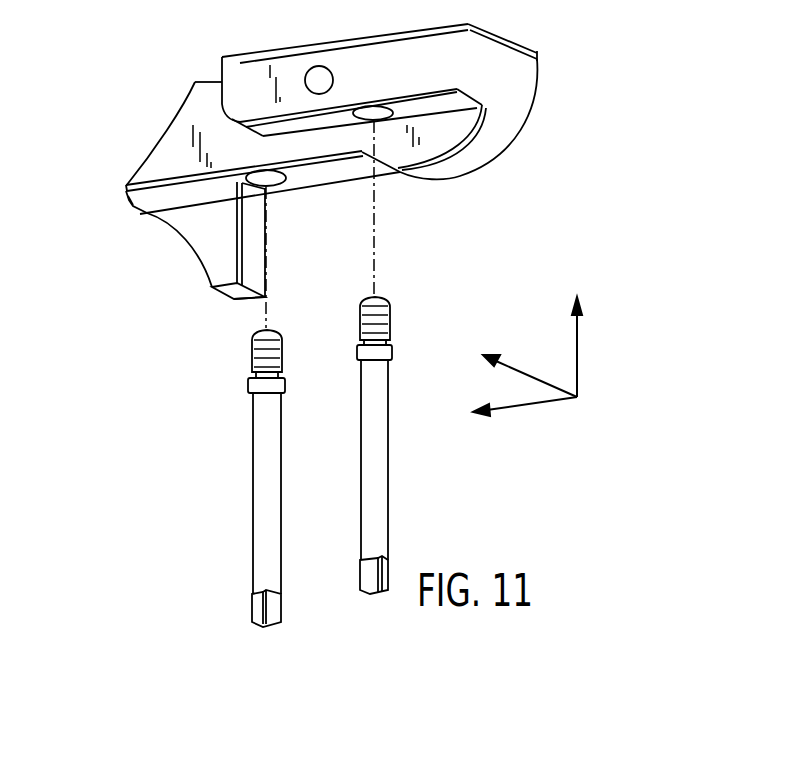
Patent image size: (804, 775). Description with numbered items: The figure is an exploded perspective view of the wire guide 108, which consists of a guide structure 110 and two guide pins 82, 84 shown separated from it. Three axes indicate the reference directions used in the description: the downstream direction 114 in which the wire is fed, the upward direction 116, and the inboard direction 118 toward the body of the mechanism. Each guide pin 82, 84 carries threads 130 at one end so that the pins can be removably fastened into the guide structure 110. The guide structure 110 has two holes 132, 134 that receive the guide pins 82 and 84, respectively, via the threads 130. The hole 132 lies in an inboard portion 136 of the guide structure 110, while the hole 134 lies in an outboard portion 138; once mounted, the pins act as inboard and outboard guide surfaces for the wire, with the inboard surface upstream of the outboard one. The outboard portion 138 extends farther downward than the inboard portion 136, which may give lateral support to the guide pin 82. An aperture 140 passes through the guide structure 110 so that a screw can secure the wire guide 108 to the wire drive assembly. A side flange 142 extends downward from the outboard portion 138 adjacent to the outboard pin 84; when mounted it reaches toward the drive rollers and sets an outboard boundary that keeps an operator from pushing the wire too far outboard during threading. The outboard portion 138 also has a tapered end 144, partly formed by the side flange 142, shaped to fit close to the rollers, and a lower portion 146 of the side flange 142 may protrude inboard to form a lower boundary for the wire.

The guide pin 82 is at (390, 460).
The guide pin 84 is at (252, 494).
The wire guide 108 is at (612, 172).
The guide structure 110 is at (122, 119).
The downstream direction axis 114 is at (533, 407).
The upward direction axis 116 is at (578, 353).
The inboard direction axis 118 is at (533, 373).
The threads 130 is at (250, 357).
The hole 132 is at (380, 108).
The hole 134 is at (268, 184).
The inboard portion 136 is at (235, 90).
The outboard portion 138 is at (155, 170).
The aperture 140 is at (316, 90).
The side flange 142 is at (210, 235).
The tapered end 144 is at (130, 192).
The lower portion 146 is at (232, 297).